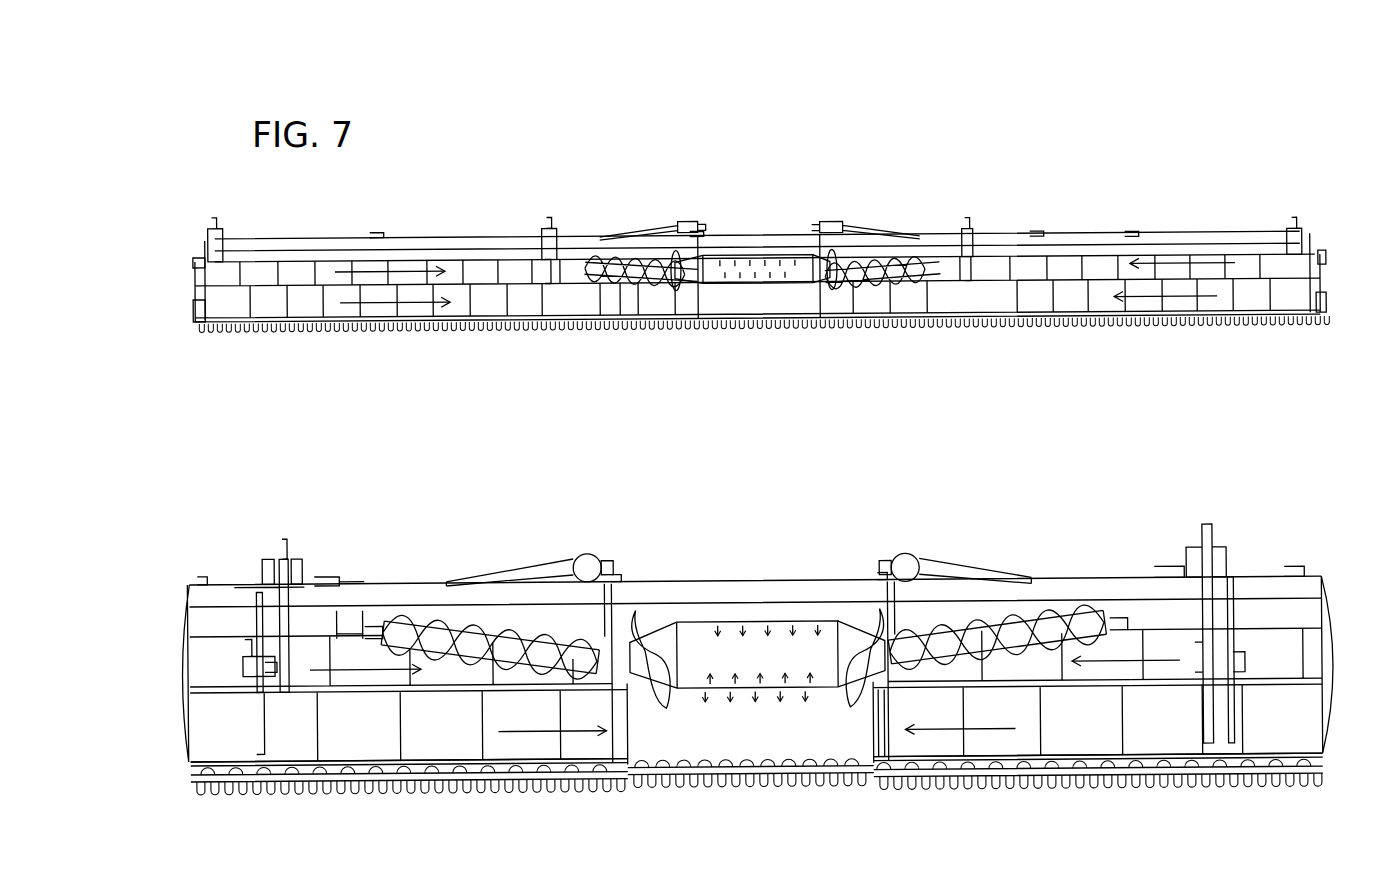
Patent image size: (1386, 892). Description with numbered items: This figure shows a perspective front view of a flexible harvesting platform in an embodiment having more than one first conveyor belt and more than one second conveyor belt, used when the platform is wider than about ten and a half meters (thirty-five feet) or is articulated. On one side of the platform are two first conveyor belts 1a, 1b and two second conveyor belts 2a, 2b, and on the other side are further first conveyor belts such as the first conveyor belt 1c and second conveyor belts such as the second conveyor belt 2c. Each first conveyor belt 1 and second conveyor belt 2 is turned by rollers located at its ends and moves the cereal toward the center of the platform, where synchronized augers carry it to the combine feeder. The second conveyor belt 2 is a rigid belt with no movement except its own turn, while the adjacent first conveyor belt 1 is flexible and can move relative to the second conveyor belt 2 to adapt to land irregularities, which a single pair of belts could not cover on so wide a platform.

The first conveyor belt 1 is at (1268, 650).
The first conveyor belt 1a is at (1045, 665).
The first conveyor belt 1b is at (447, 667).
The first conveyor belt 1c is at (226, 667).
The second conveyor belt 2 is at (1284, 721).
The second conveyor belt 2a is at (1064, 735).
The second conveyor belt 2b is at (431, 738).
The second conveyor belt 2c is at (215, 741).